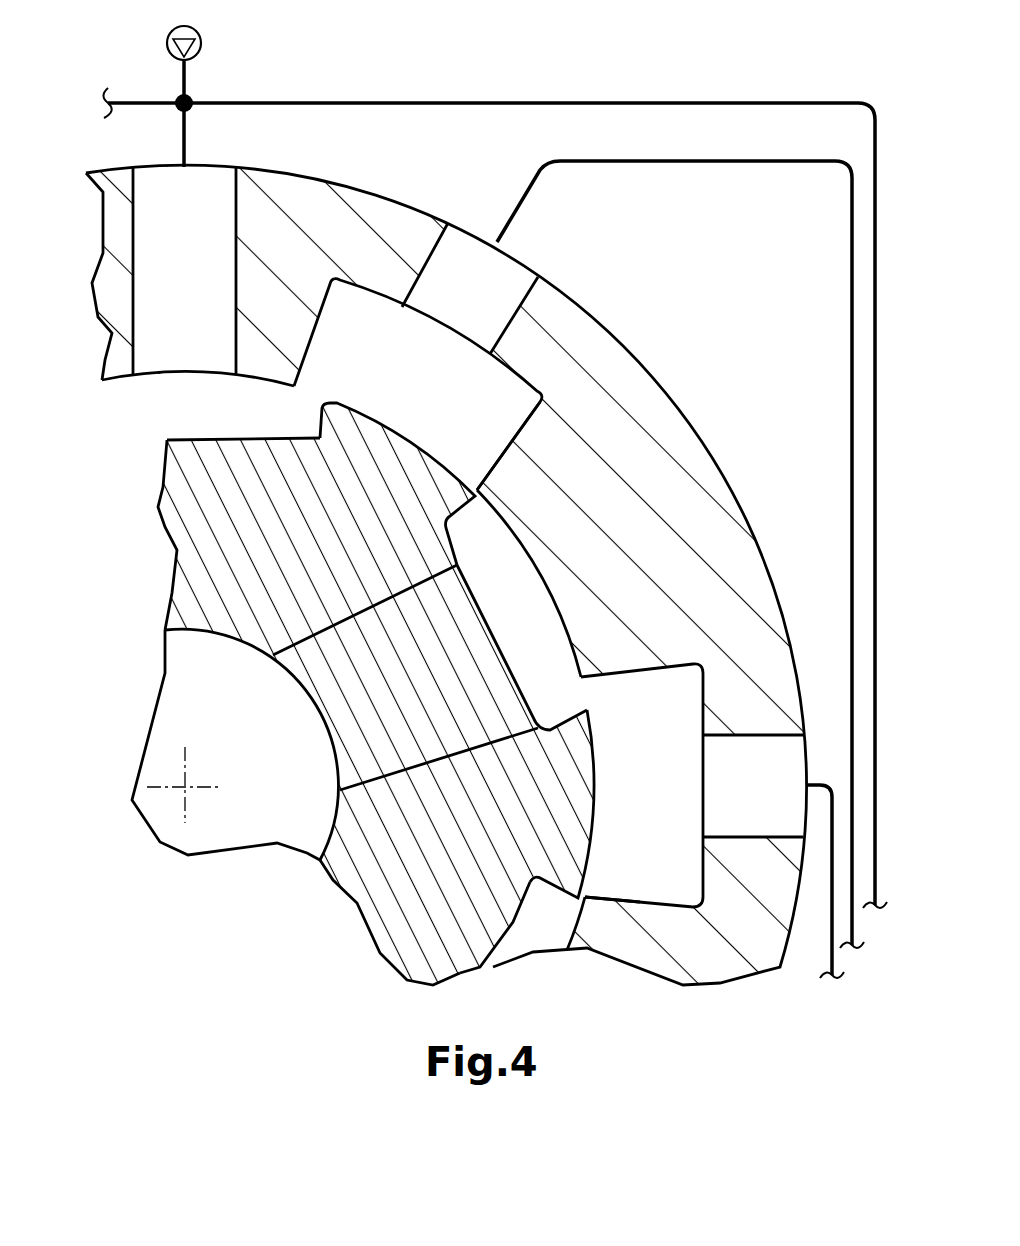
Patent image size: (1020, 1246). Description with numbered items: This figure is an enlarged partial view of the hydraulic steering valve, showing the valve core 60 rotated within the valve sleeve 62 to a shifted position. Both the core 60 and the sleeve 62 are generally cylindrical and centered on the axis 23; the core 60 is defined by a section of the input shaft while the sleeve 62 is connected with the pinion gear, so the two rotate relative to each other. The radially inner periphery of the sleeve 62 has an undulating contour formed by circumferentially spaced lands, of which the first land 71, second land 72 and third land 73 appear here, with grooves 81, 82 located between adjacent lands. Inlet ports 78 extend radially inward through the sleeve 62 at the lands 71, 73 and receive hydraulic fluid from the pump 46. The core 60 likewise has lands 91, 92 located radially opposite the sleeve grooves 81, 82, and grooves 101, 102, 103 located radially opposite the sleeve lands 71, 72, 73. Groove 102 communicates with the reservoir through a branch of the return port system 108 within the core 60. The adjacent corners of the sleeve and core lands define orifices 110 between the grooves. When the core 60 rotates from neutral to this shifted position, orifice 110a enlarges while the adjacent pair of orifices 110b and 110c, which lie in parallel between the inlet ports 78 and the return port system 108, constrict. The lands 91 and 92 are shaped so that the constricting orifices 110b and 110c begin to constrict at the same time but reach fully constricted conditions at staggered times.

The axis 23 is at (188, 786).
The pump 46 is at (173, 29).
The valve core 60 is at (141, 508).
The valve sleeve 62 is at (84, 227).
The first land 71 is at (270, 378).
The second land 72 is at (558, 577).
The third land 73 is at (562, 928).
The inlet port 78 is at (223, 165).
The groove 81 is at (378, 316).
The groove 82 is at (688, 727).
The land 91 is at (383, 453).
The land 92 is at (570, 788).
The groove 101 is at (162, 434).
The groove 102 is at (513, 667).
The groove 103 is at (513, 930).
The return port system 108 is at (295, 751).
The orifice 110 is at (284, 355).
The enlarging orifice 110a is at (608, 692).
The constricting orifice 110b is at (480, 470).
The constricting orifice 110c is at (607, 909).